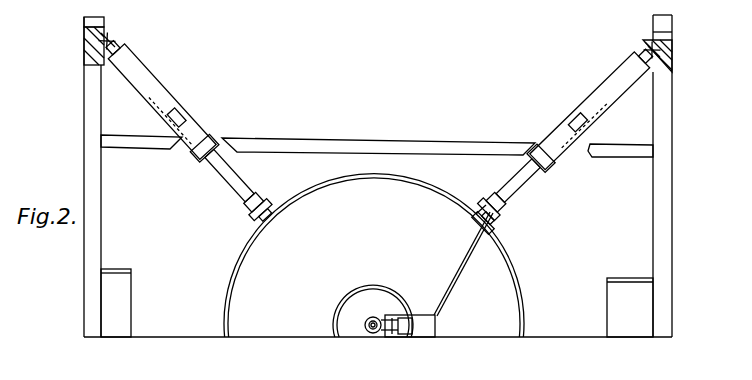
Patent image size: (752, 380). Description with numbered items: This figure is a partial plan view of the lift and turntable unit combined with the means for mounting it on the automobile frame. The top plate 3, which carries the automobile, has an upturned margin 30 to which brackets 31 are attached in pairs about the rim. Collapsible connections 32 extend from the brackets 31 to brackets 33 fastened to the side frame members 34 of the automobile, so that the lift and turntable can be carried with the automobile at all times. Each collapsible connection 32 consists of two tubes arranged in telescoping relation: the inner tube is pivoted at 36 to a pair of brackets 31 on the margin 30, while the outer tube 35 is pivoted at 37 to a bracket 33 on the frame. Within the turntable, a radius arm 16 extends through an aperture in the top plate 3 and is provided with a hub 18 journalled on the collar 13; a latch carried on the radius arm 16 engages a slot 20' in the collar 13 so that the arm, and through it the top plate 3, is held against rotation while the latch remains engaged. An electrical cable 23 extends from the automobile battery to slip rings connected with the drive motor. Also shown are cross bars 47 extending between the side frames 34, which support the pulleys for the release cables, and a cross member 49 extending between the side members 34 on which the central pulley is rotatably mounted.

The top plate 3 is at (415, 182).
The collar 13 is at (358, 336).
The radius arm 16 is at (436, 327).
The hub 18 is at (363, 323).
The slot 20' is at (393, 344).
The electrical cable 23 is at (460, 278).
The upturned margin 30 is at (327, 178).
The brackets 31 is at (493, 232).
The collapsible connections 32 is at (193, 106).
The brackets 33 is at (110, 28).
The side frame members 34 is at (100, 101).
The tube 35 is at (600, 121).
The pivot 36 is at (480, 212).
The pivot 37 is at (645, 52).
The cross bars 47 is at (610, 157).
The cross member 49 is at (608, 278).